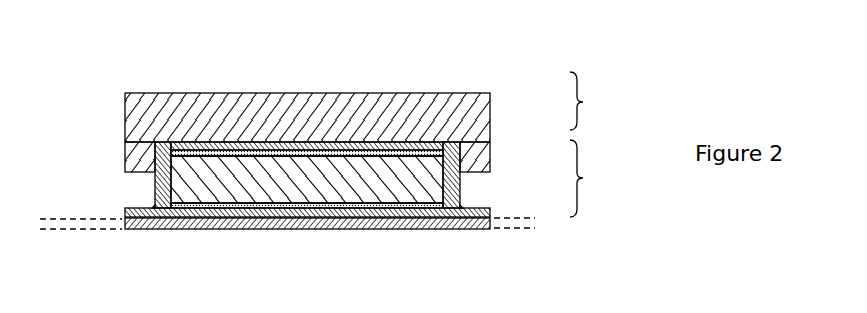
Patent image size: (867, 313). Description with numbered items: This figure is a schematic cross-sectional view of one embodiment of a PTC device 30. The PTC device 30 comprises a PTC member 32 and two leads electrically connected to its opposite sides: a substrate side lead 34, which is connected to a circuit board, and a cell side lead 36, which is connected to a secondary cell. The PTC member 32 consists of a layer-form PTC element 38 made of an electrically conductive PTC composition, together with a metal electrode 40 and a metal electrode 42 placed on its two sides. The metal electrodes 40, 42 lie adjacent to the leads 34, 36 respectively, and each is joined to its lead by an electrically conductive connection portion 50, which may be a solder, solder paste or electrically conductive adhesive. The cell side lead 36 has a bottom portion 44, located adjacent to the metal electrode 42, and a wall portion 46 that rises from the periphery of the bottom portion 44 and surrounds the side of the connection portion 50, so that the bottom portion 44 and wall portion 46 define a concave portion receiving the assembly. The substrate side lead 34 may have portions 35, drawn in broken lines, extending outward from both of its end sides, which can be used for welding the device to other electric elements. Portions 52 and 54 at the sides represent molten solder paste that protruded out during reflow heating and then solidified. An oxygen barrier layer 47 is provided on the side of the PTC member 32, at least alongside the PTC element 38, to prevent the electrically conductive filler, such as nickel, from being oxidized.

The PTC device 30 is at (344, 86).
The PTC member 32 is at (595, 178).
The substrate side lead 34 is at (467, 229).
The extending portions 35 is at (80, 232).
The cell side lead 36 is at (595, 101).
The PTC element 38 is at (462, 178).
The metal electrode 40 is at (472, 200).
The metal electrode 42 is at (462, 160).
The bottom portion 44 is at (482, 117).
The wall portion 46 is at (482, 147).
The oxygen barrier layer 47 is at (156, 185).
The electrically conductive connection portion 50 is at (262, 151).
The protruded solder portion 52 is at (168, 142).
The protruded solder portion 54 is at (164, 230).